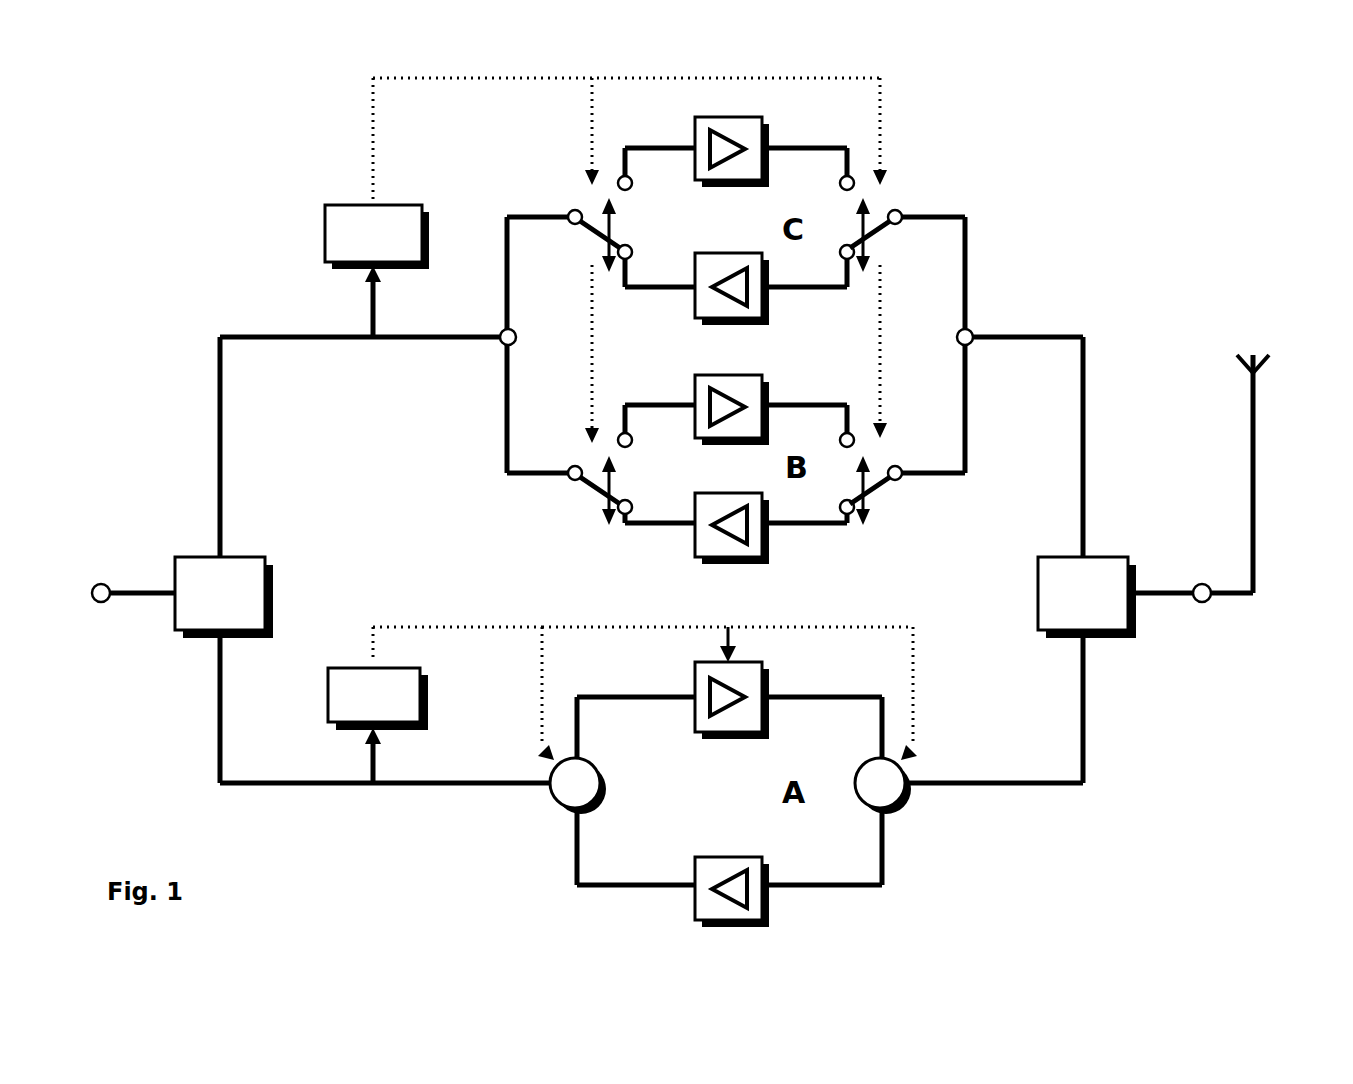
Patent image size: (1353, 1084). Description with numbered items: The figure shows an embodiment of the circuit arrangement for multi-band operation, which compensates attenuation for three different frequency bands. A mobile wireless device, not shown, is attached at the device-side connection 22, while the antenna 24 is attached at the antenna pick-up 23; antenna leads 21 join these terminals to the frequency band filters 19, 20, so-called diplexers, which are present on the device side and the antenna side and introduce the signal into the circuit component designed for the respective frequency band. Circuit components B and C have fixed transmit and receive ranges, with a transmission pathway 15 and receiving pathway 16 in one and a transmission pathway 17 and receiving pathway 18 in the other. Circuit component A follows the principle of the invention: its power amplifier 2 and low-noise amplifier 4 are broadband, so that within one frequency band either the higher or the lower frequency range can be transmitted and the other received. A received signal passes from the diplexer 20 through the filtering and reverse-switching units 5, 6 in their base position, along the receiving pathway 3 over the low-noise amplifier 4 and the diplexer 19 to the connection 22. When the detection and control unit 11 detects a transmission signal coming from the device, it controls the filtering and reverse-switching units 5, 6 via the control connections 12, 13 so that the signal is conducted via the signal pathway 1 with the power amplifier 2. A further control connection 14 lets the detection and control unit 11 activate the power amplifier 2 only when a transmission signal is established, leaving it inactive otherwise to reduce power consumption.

The signal pathway (transmission pathway) 1 is at (643, 695).
The power amplifier 2 is at (697, 730).
The signal pathway (receiving pathway) 3 is at (573, 870).
The low-noise amplifier 4 is at (697, 857).
The filtering and reverse-switching unit 5 is at (553, 795).
The filtering and reverse-switching unit 6 is at (900, 810).
The detection and control unit 11 is at (327, 715).
The control connection 12 is at (540, 712).
The control connection 13 is at (915, 660).
The control connection 14 is at (728, 643).
The transmission pathway 15 is at (678, 407).
The receiving pathway 16 is at (675, 525).
The transmission pathway 17 is at (657, 147).
The receiving pathway 18 is at (677, 290).
The frequency band filter (diplexer) 19 is at (260, 555).
The frequency band filter (diplexer) 20 is at (1037, 565).
The antenna lead 21 is at (153, 590).
The device-side connection 22 is at (103, 605).
The antenna pick-up 23 is at (1200, 607).
The antenna 24 is at (1257, 507).